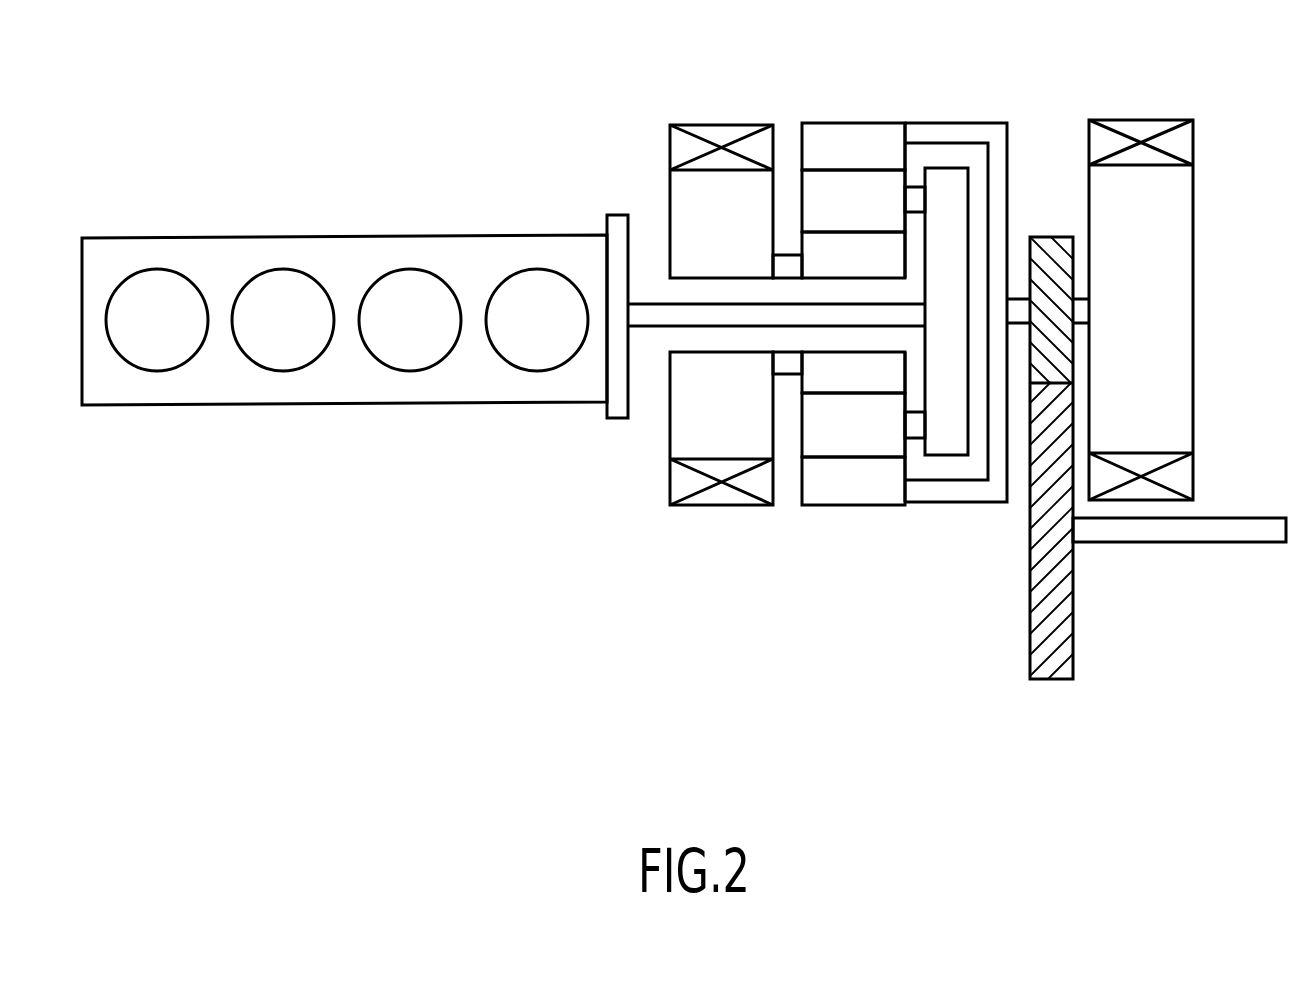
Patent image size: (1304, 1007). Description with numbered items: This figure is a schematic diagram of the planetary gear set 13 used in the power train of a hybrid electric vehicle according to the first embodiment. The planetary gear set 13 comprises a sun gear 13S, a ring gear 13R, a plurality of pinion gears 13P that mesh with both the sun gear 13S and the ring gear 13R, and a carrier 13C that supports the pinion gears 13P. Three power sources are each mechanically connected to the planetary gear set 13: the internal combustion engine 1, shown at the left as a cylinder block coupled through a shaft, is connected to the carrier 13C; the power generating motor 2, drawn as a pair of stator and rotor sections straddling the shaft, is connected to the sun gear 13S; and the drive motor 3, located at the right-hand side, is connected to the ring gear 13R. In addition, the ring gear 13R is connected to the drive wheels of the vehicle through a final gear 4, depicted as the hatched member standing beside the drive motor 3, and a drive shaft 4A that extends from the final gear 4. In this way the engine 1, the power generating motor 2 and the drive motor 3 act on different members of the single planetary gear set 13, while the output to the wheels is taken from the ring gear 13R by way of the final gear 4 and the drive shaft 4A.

The internal combustion engine 1 is at (183, 257).
The power generating motor 2 is at (722, 123).
The drive motor 3 is at (1141, 118).
The final gear 4 is at (1046, 680).
The drive shaft 4A is at (1240, 544).
The planetary gear set 13 is at (799, 299).
The sun gear 13S is at (823, 372).
The pinion gears 13P is at (830, 444).
The ring gear 13R is at (860, 492).
The carrier 13C is at (951, 442).